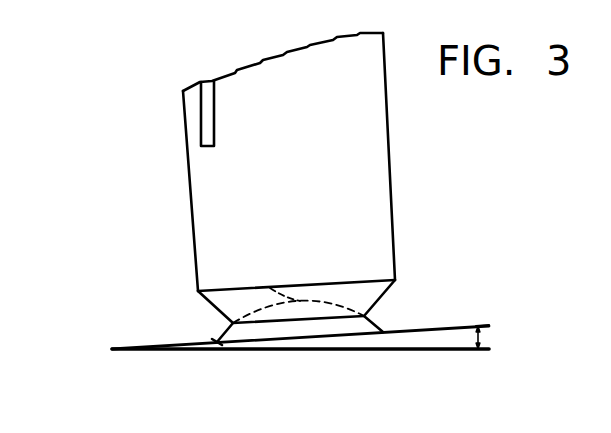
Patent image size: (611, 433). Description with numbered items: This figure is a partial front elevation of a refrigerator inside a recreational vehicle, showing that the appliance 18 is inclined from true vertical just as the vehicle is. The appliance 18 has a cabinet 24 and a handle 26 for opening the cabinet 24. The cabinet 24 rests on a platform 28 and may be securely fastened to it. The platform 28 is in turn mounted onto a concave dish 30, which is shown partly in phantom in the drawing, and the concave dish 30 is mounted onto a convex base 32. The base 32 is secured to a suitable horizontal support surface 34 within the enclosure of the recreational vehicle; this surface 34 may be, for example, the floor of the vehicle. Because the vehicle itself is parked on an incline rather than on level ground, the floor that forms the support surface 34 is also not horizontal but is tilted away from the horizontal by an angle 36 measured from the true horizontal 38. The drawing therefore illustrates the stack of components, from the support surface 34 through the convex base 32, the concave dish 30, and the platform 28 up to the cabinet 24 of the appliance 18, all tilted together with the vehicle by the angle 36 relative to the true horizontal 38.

The appliance 18 is at (403, 132).
The cabinet 24 is at (383, 210).
The handle 26 is at (215, 117).
The platform 28 is at (383, 296).
The concave dish 30 is at (270, 288).
The convex base 32 is at (212, 340).
The horizontal support surface 34 is at (450, 326).
The angle 36 is at (482, 337).
The true horizontal 38 is at (433, 352).